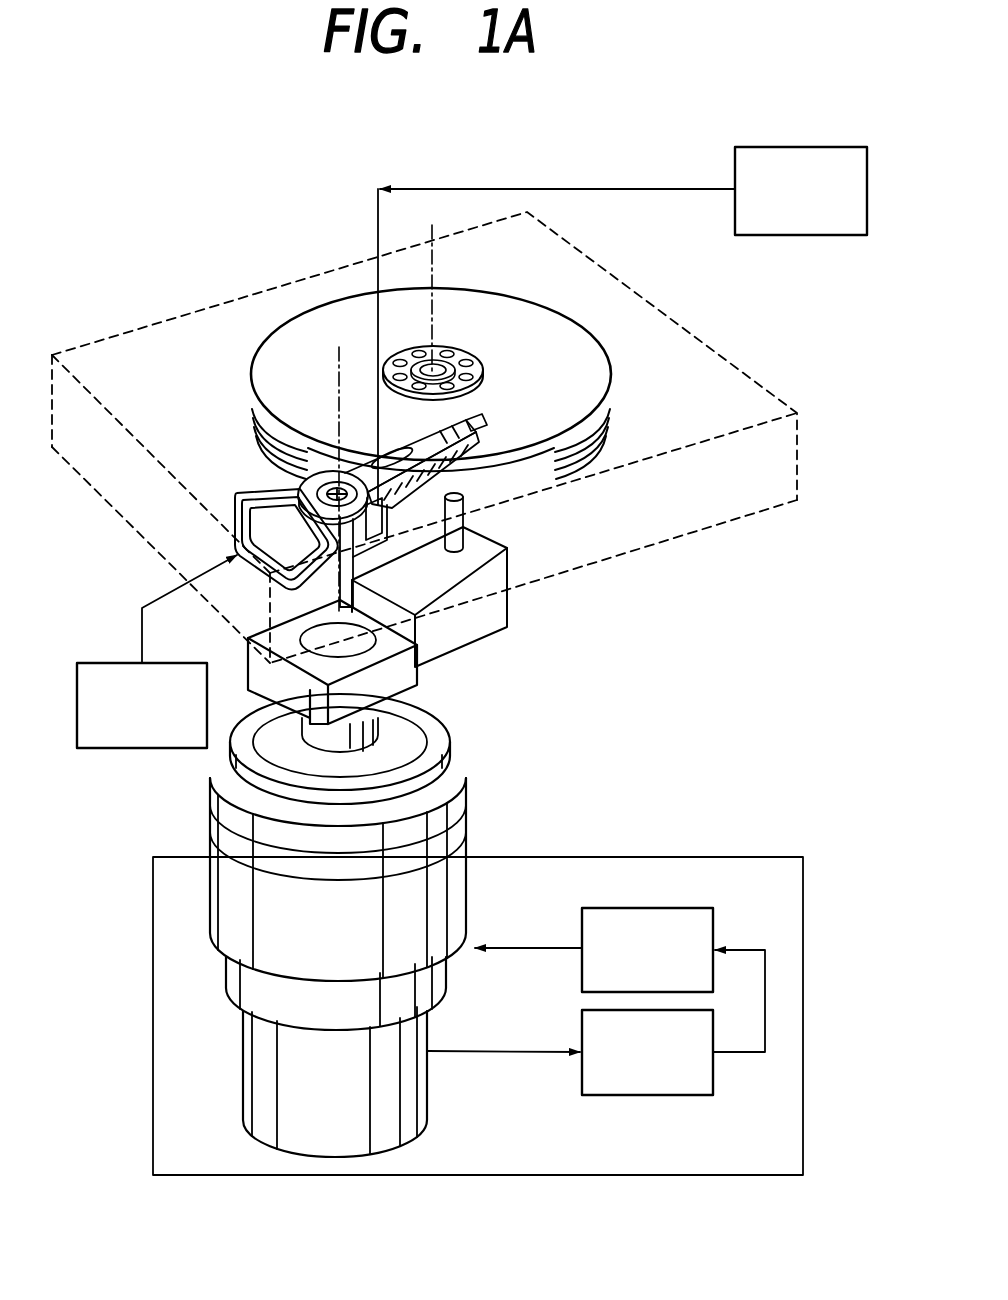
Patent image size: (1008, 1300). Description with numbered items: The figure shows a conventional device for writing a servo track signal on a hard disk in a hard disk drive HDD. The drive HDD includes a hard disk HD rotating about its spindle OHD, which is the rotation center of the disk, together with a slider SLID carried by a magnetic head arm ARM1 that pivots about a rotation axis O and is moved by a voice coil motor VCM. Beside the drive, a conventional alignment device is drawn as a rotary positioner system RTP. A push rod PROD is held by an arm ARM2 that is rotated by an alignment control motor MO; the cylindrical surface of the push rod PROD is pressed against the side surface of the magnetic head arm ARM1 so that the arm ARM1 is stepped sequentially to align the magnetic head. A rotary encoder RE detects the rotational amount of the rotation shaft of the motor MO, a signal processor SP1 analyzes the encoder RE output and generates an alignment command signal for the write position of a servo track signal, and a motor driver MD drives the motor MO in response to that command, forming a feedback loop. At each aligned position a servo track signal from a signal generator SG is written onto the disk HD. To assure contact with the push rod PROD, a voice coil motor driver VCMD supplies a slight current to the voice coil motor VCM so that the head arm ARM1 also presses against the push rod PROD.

The hard disk drive HDD is at (221, 296).
The signal generator SG is at (622, 326).
The hard disk HD is at (537, 340).
The spindle OHD is at (436, 254).
The rotation axis O is at (338, 368).
The voice coil motor VCM is at (262, 497).
The magnetic head arm ARM1 is at (457, 480).
The slider SLID is at (477, 417).
The push rod PROD is at (503, 557).
The arm for the push rod ARM2 is at (460, 633).
The voice coil motor driver VCMD is at (157, 651).
The alignment control motor MO is at (453, 895).
The rotary encoder RE is at (420, 1082).
The rotary positioner system RTP is at (478, 1016).
The motor driver MD is at (620, 980).
The signal processor SP1 is at (570, 1052).